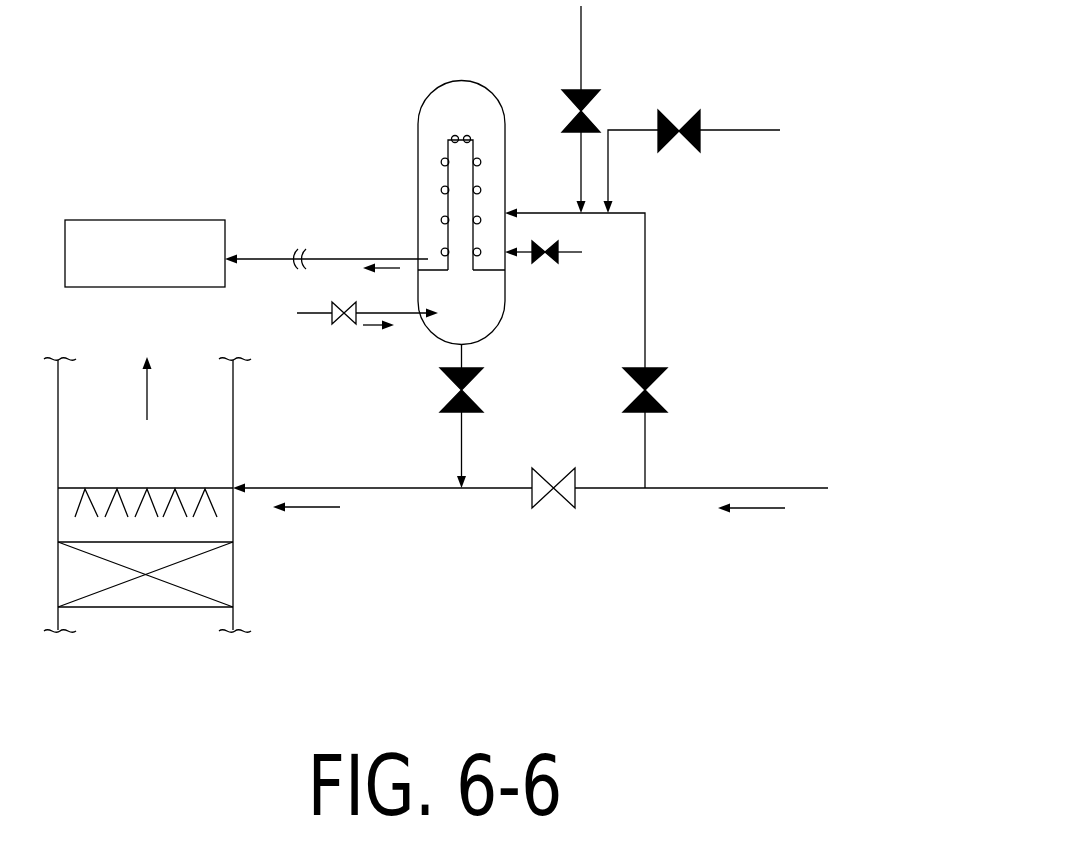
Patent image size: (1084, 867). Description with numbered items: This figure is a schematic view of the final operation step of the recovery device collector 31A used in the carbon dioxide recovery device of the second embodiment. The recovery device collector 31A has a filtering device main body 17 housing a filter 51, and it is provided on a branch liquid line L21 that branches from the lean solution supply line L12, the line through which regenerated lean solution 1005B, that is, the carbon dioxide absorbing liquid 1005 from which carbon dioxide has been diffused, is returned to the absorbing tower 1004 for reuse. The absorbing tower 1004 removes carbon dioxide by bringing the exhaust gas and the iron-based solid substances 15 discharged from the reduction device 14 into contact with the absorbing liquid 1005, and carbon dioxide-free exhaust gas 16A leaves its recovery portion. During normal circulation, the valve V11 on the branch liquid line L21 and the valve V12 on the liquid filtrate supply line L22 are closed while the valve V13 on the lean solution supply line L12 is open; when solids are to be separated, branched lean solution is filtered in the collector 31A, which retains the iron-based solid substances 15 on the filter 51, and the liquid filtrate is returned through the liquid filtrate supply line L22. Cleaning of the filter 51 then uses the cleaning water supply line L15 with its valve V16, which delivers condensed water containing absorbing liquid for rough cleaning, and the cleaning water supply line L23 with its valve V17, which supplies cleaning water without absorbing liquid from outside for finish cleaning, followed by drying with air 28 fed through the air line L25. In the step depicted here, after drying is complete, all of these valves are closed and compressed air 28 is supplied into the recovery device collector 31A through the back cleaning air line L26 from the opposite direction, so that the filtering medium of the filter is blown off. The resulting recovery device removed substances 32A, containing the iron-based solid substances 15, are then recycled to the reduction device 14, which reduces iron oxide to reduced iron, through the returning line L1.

The recovery device collector 31A is at (463, 54).
The filtering device main body 17 is at (506, 157).
The iron-based solid substances 15 is at (441, 160).
The filter 51 is at (444, 240).
The reduction device 14 is at (144, 220).
The CO2-free exhaust gas 16A is at (149, 372).
The removed substance returning line L1 is at (326, 259).
The recovery device removed substances 32A is at (375, 273).
The compressed air 28 is at (376, 330).
The back cleaning air line L26 is at (313, 315).
The cleaning water supply line L15 is at (581, 42).
The valve V16 is at (562, 104).
The cleaning water supply line L23 is at (630, 130).
The valve V17 is at (688, 152).
The branch liquid line L21 is at (645, 318).
The air line L25 is at (553, 263).
The valve V12 is at (478, 396).
The valve V11 is at (662, 396).
The liquid filtrate supply line L22 is at (461, 440).
The lean solution supply line L12 is at (768, 488).
The valve V13 is at (560, 508).
The lean solution 1005B is at (750, 509).
The CO2 absorbing liquid 1005 is at (312, 508).
The CO2 absorbing tower 1004 is at (245, 423).